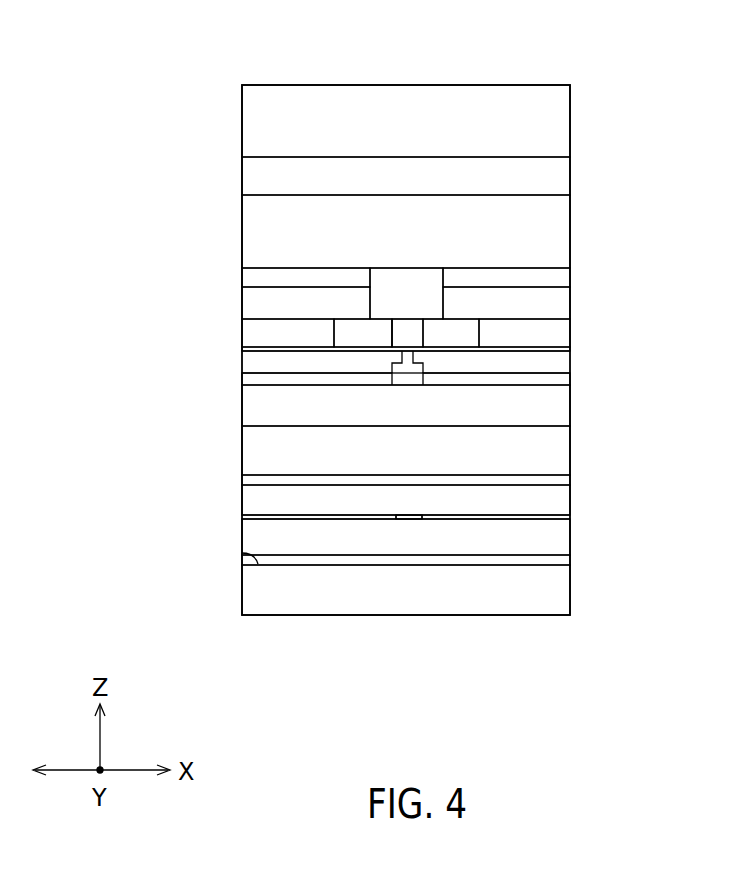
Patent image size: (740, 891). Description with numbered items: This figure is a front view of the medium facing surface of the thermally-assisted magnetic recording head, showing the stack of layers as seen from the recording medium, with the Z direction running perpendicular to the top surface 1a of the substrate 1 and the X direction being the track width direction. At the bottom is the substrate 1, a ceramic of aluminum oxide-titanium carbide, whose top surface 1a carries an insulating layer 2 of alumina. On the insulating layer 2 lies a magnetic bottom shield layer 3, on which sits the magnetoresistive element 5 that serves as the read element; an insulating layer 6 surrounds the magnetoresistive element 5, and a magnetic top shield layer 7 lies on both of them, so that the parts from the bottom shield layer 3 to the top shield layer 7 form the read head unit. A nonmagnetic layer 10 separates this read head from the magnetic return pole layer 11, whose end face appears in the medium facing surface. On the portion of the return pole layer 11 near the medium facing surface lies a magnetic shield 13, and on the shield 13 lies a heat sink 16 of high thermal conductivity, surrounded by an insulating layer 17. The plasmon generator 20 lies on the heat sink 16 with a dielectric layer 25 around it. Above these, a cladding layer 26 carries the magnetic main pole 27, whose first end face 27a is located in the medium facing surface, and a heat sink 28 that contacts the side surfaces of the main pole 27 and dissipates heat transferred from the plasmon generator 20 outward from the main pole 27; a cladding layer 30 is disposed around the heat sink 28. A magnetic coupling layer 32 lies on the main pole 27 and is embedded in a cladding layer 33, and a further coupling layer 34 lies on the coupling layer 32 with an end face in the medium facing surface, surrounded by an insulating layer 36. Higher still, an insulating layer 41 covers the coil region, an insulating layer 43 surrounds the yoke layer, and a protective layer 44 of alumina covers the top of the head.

The substrate 1 is at (568, 588).
The top surface 1a is at (242, 553).
The insulating layer 2 is at (568, 558).
The bottom shield layer 3 is at (568, 535).
The magnetoresistive (MR) element 5 is at (404, 519).
The insulating layer 6 is at (568, 517).
The top shield layer 7 is at (568, 500).
The nonmagnetic layer 10 is at (568, 480).
The return pole layer 11 is at (568, 452).
The shield 13 is at (568, 405).
The heat sink 16 is at (390, 375).
The insulating layer 17 is at (566, 378).
The plasmon generator 20 is at (398, 357).
The dielectric layer 25 is at (566, 362).
The cladding layer 26 is at (566, 350).
The main pole 27 is at (389, 338).
The first end face 27a is at (408, 330).
The heat sink 28 is at (330, 331).
The cladding layer 30 is at (566, 335).
The coupling layer 32 is at (372, 305).
The cladding layer 33 is at (566, 303).
The coupling layer 34 is at (372, 278).
The insulating layer 36 is at (566, 275).
The insulating layer 41 is at (566, 216).
The insulating layer 43 is at (572, 170).
The protective layer 44 is at (572, 118).